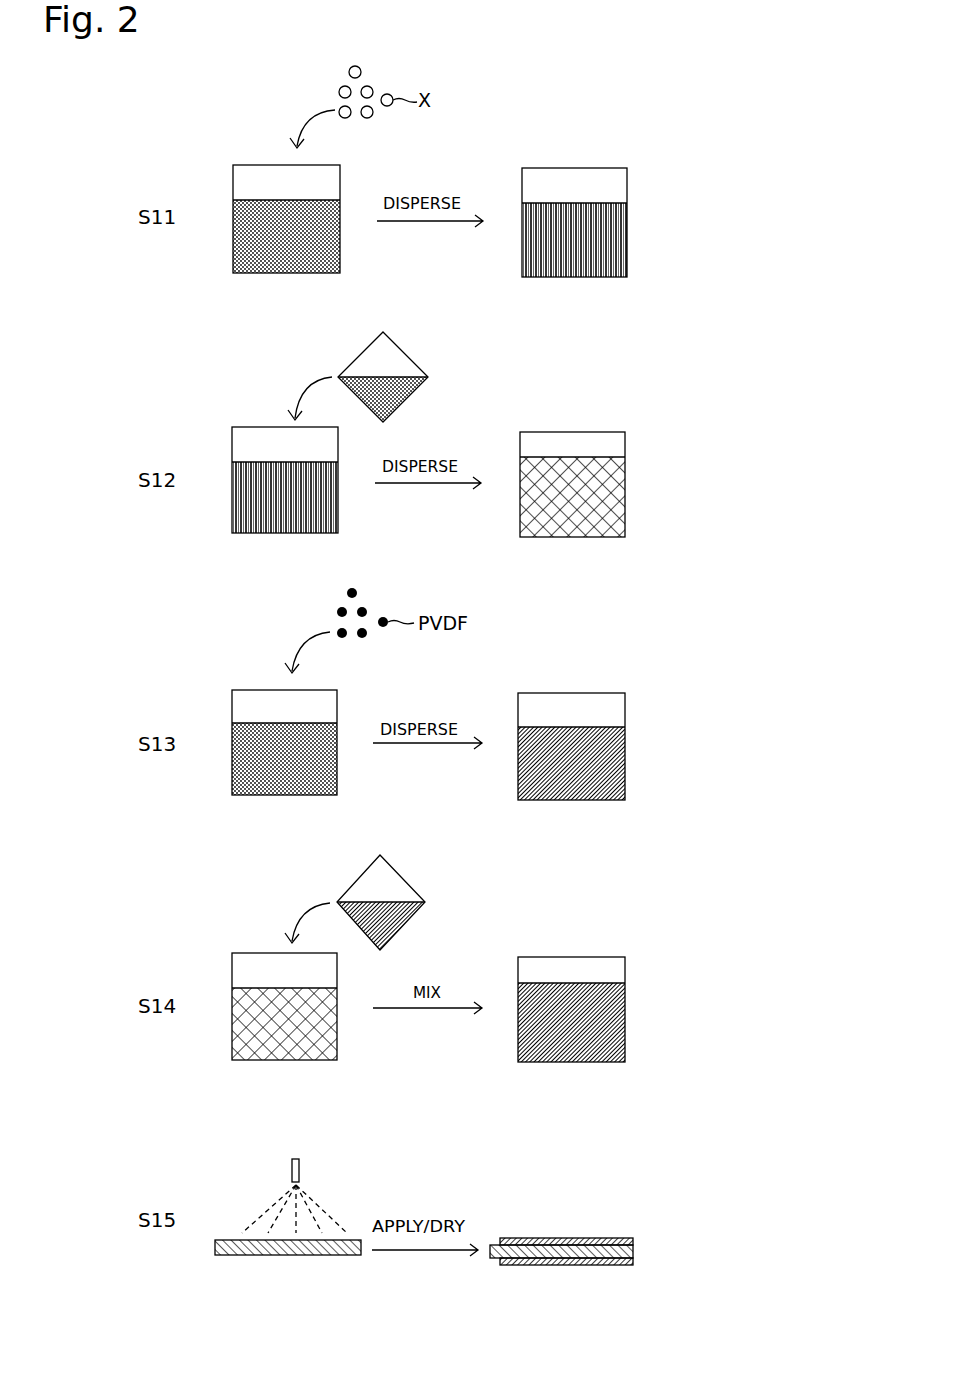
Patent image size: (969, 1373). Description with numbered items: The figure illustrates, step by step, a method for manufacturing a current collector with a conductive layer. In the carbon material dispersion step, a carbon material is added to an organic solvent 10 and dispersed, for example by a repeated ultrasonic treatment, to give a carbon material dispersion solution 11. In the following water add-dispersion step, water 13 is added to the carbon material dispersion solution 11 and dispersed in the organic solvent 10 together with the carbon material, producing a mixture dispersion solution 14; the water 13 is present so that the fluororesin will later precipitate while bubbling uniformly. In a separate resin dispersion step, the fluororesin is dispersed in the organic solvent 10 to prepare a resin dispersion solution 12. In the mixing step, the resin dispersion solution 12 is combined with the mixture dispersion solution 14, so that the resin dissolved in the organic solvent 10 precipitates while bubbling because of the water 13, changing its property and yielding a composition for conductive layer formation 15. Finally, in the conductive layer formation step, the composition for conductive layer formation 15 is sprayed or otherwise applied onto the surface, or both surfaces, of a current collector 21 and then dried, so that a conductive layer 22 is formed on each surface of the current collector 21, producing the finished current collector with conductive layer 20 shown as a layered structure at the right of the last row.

The organic solvent 10 is at (332, 257).
The carbon material dispersion solution 11 is at (620, 258).
The resin dispersion solution 12 is at (618, 782).
The water 13 is at (393, 400).
The mixture dispersion solution 14 is at (618, 518).
The composition for conductive layer formation 15 is at (618, 1045).
The current collector with conductive layer 20 is at (604, 1210).
The current collector 21 is at (307, 1258).
The conductive layer 22 is at (633, 1240).